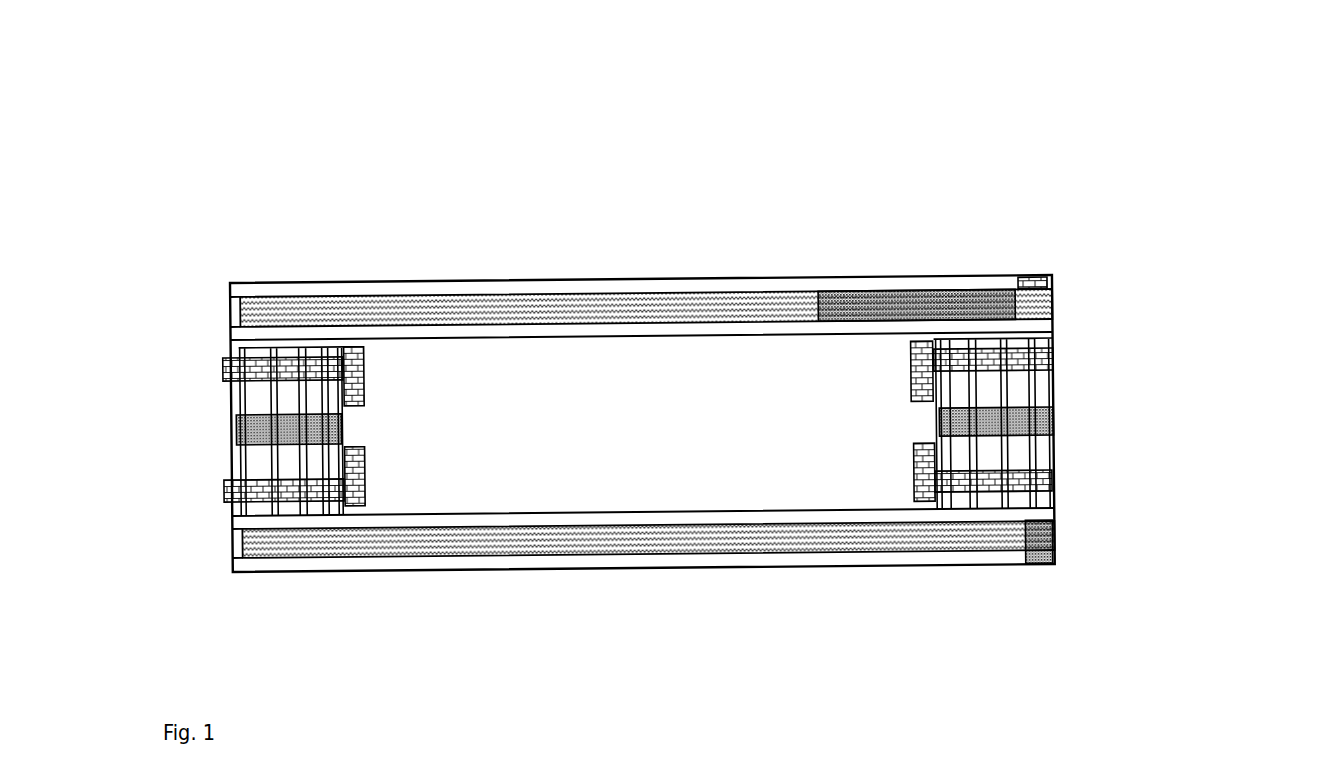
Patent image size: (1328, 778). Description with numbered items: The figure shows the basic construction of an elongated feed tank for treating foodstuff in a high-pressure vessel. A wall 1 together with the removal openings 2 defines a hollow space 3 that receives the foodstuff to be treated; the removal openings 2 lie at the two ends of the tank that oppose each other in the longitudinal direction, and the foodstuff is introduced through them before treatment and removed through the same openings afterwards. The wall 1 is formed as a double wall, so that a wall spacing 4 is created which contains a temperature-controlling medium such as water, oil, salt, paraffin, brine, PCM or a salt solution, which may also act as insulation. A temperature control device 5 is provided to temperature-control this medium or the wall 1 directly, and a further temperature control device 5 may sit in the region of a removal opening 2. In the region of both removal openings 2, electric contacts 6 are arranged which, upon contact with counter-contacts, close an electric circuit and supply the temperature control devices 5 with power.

The wall 1 is at (502, 303).
The removal opening 2 is at (212, 418).
The hollow space 3 is at (627, 455).
The wall spacing 4 is at (610, 305).
The temperature control device 5 is at (998, 293).
The electric contact 6 is at (220, 378).